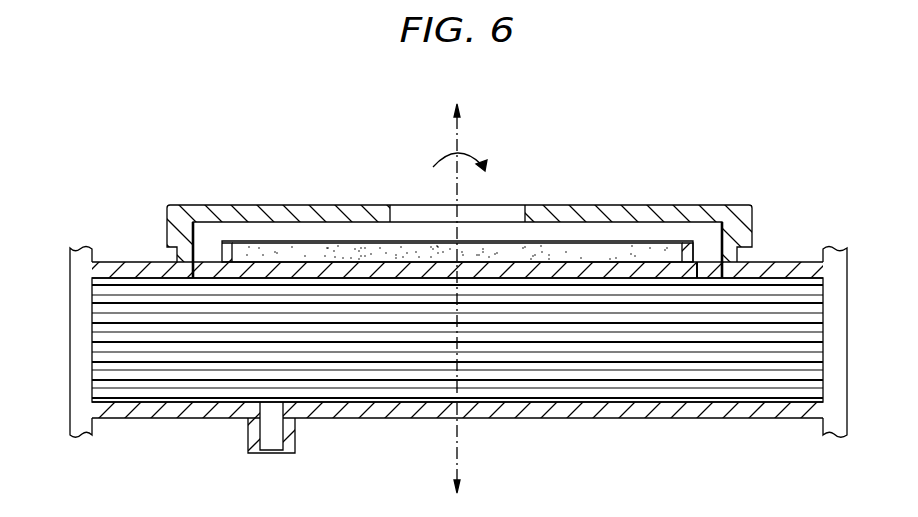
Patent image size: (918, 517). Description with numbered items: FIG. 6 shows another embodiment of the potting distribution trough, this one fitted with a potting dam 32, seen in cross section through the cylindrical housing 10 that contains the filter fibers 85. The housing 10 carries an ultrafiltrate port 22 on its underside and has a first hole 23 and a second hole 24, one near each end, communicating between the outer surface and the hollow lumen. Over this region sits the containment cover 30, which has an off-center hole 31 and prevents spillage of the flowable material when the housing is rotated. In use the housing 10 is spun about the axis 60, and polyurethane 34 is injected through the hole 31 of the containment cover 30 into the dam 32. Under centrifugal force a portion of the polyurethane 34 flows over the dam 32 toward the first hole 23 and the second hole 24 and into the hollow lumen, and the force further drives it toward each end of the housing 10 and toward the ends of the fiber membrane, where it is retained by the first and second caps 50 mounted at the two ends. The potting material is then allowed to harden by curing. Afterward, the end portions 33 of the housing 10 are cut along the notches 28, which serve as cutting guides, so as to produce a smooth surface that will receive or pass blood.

The housing 10 is at (613, 443).
The ultrafiltrate port 22 is at (296, 441).
The first hole 23 is at (708, 270).
The second hole 24 is at (203, 268).
The notch 28 is at (118, 410).
The containment cover 30 is at (292, 205).
The hole 31 is at (506, 205).
The potting dam 32 is at (685, 258).
The end portion 33 is at (101, 262).
The polyurethane 34 is at (627, 250).
The first and second caps 50 is at (75, 329).
The axis 60 is at (455, 127).
The filter fibers 85 is at (203, 375).